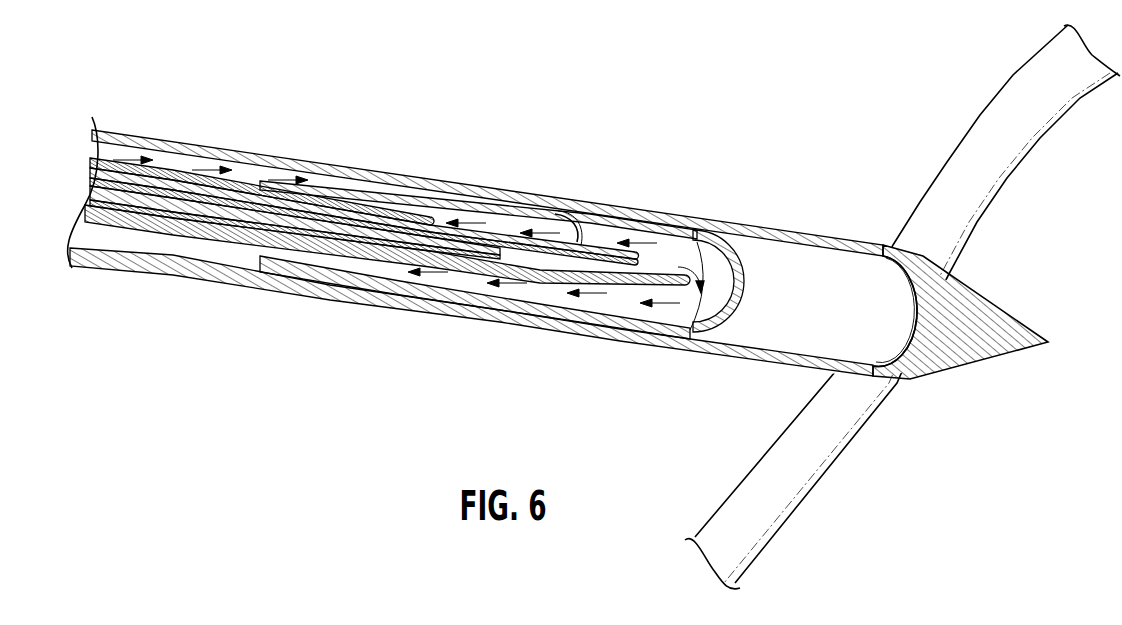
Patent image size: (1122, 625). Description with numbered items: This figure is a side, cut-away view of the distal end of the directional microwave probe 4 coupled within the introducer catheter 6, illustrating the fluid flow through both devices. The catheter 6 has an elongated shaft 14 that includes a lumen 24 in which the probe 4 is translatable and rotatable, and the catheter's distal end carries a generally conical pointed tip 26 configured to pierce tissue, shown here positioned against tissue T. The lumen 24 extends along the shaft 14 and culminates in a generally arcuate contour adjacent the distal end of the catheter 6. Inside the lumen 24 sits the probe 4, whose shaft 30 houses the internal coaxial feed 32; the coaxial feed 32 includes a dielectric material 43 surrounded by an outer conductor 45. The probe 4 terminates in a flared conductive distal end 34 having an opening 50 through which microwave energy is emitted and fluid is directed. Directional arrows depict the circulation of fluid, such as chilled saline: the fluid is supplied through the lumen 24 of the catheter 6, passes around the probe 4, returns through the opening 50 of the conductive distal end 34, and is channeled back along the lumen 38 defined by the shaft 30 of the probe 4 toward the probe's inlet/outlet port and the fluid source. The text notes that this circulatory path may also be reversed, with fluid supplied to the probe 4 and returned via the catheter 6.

The directional microwave probe 4 is at (738, 233).
The catheter 6 is at (1006, 293).
The shaft 14 is at (137, 134).
The lumen 24 is at (799, 259).
The pointed tip 26 is at (1030, 323).
The shaft 30 is at (236, 190).
The internal coaxial feed 32 is at (623, 288).
The conductive distal end 34 is at (343, 174).
The lumen 38 is at (547, 228).
The dielectric material 43 is at (633, 244).
The outer conductor 45 is at (428, 228).
The opening 50 is at (673, 235).
The tissue T is at (1012, 76).